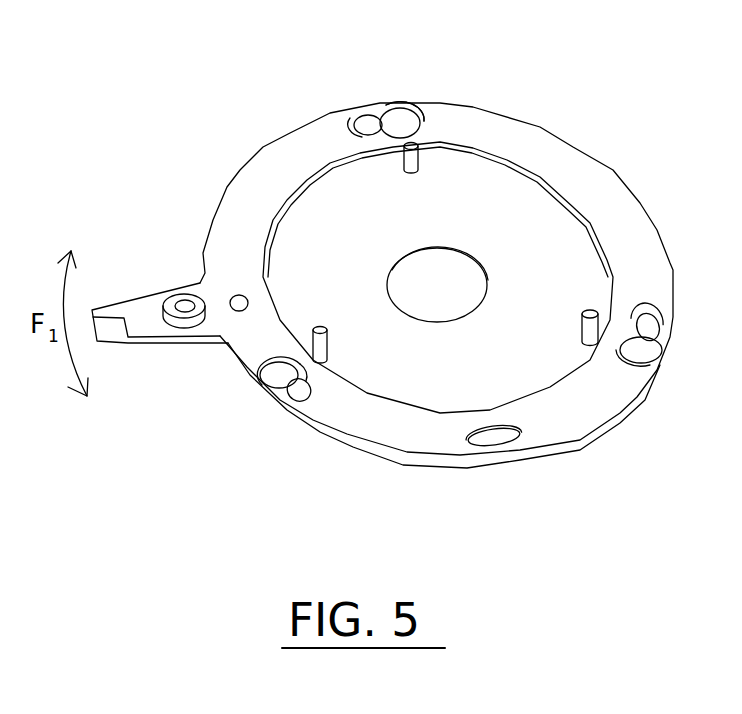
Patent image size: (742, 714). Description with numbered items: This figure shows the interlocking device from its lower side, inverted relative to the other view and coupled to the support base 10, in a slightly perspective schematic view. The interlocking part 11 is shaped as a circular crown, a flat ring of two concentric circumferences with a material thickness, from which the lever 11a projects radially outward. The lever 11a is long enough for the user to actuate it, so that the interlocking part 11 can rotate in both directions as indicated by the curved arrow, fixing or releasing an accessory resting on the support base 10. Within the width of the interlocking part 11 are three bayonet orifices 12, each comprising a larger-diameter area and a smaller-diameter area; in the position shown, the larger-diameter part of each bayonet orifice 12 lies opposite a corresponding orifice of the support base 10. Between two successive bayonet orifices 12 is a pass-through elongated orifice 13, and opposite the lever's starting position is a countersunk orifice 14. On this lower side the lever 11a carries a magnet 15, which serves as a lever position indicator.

The support base 10 is at (520, 233).
The interlocking part 11 is at (0, 190).
The lever 11a is at (147, 330).
The bayonet orifices 12 is at (640, 353).
The pass-through elongated orifice 13 is at (487, 443).
The countersunk orifice 14 is at (250, 295).
The magnet 15 is at (197, 327).